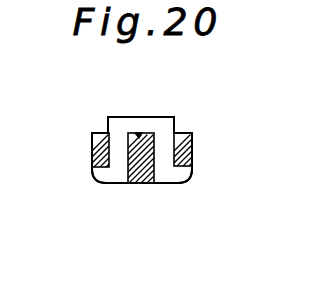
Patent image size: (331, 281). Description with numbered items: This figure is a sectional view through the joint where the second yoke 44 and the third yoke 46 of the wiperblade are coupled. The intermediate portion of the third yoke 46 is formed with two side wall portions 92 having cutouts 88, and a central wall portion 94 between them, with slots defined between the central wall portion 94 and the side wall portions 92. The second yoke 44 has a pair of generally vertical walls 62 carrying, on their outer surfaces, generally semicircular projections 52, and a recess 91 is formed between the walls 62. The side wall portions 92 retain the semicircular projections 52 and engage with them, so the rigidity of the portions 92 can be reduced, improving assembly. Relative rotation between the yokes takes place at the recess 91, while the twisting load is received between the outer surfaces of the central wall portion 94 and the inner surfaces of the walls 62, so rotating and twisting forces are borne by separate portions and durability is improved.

The second yoke 44 is at (156, 126).
The third yoke 46 is at (92, 157).
The semicircular projections 52 is at (102, 175).
The vertical walls 62 is at (120, 160).
The cutouts 88 is at (106, 132).
The recess 91 is at (137, 133).
The side wall portions 92 is at (92, 138).
The central wall portion 94 is at (143, 185).